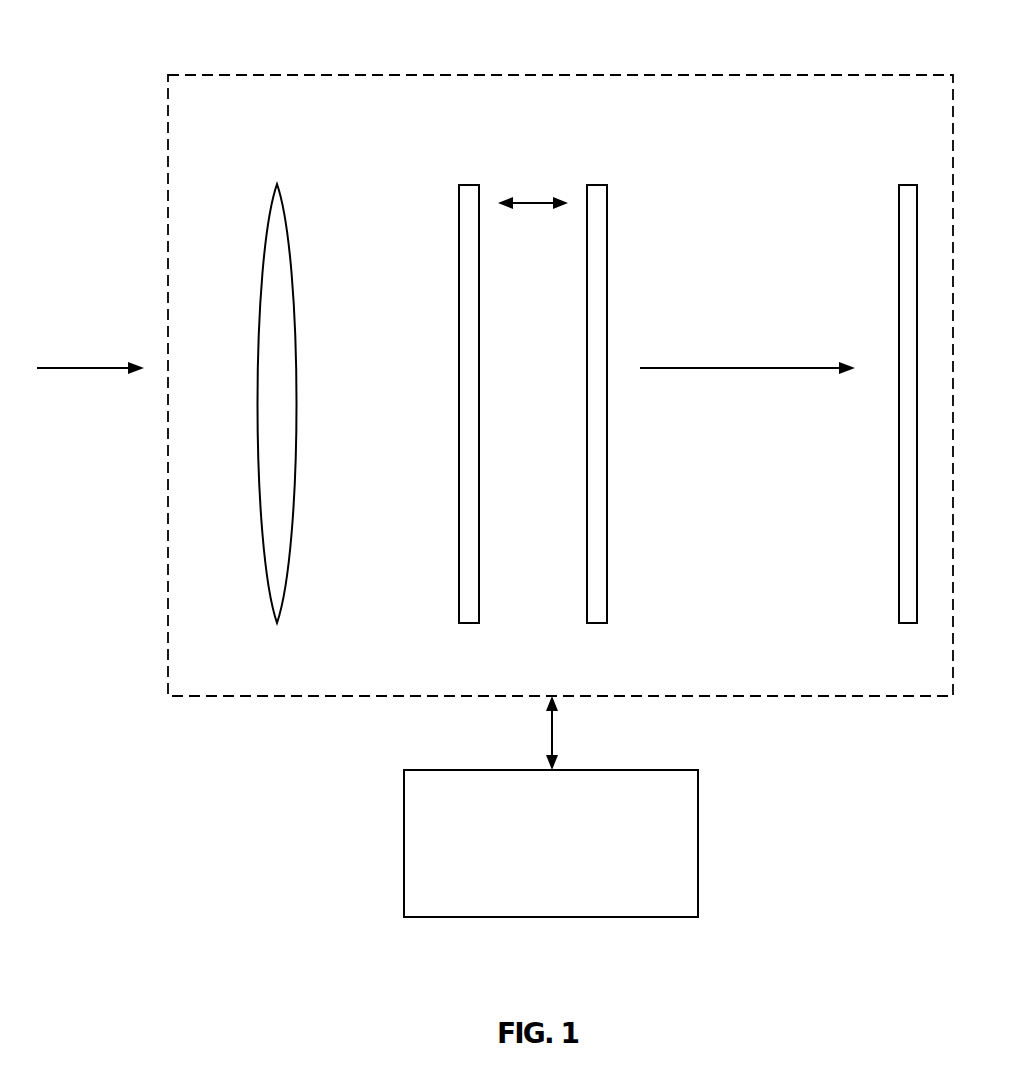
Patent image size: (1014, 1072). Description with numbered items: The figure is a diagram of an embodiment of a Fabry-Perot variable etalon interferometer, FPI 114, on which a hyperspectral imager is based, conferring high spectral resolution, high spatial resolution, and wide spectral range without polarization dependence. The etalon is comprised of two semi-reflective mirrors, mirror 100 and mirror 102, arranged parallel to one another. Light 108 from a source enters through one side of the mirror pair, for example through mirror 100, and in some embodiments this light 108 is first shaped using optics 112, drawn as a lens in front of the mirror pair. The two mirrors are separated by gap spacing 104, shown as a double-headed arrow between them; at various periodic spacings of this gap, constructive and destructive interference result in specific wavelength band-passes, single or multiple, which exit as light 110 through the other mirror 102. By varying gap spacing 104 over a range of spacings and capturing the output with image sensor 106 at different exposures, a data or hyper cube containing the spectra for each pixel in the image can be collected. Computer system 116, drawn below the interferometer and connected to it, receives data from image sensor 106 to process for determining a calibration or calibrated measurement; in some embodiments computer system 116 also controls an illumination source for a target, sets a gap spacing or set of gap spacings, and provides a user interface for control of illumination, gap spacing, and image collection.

The mirror 100 is at (459, 193).
The mirror 102 is at (597, 185).
The gap spacing 104 is at (533, 203).
The image sensor 106 is at (899, 196).
The light 108 is at (90, 367).
The light 110 is at (748, 367).
The optics 112 is at (277, 203).
The Fabry-Perot variable etalon interferometer (FPI) 114 is at (790, 92).
The computer system 116 is at (699, 843).